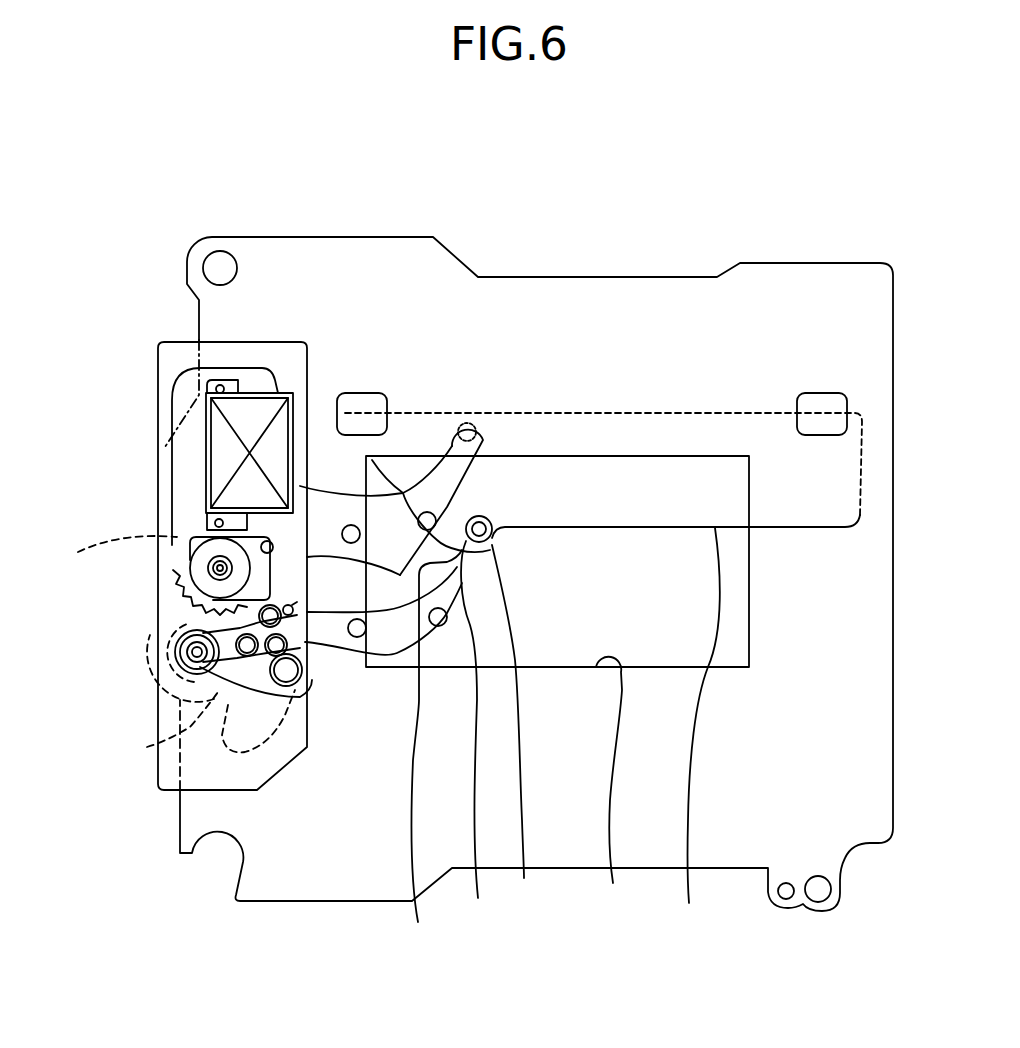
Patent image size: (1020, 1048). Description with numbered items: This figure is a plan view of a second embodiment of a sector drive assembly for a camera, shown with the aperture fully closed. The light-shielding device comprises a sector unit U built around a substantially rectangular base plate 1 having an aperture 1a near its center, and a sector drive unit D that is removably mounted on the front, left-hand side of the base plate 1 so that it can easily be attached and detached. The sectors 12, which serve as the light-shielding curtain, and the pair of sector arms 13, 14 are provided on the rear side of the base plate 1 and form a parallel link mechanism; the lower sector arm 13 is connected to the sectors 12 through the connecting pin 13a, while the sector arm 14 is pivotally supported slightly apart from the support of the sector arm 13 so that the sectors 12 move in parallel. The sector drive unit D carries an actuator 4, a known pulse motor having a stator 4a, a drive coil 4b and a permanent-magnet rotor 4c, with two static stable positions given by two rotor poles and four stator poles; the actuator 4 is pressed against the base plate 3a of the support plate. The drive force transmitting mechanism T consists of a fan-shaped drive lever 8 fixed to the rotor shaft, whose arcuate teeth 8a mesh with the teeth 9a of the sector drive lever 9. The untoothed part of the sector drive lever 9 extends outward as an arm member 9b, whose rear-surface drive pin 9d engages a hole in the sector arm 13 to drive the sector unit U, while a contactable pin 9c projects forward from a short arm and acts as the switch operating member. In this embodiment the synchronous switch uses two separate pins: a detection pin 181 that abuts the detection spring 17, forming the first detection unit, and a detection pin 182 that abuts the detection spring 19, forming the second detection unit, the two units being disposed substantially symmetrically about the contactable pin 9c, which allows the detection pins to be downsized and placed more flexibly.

The base plate 1 is at (527, 278).
The aperture 1a is at (557, 698).
The base plate of the support plate 3a is at (158, 363).
The actuator 4 is at (78, 392).
The stator 4a is at (172, 462).
The drive coil 4b is at (173, 404).
The rotor 4c is at (198, 535).
The drive lever 8 is at (151, 575).
The teeth 8a is at (185, 580).
The sector drive lever 9 is at (165, 632).
The teeth 9a is at (185, 612).
The arm member 9b is at (202, 728).
The contactable pin 9c is at (215, 625).
The drive pin 9d is at (305, 672).
The sectors 12 is at (599, 672).
The sector arm 13 is at (399, 682).
The connecting pin 13a is at (525, 739).
The sector arm 14 is at (434, 759).
The detection spring 17 is at (290, 702).
The detection spring 19 is at (273, 550).
The detection pin 181 is at (298, 622).
The detection pin 182 is at (193, 656).
The sector drive unit D is at (168, 311).
The drive force transmitting mechanism T is at (52, 545).
The sector unit U is at (590, 252).